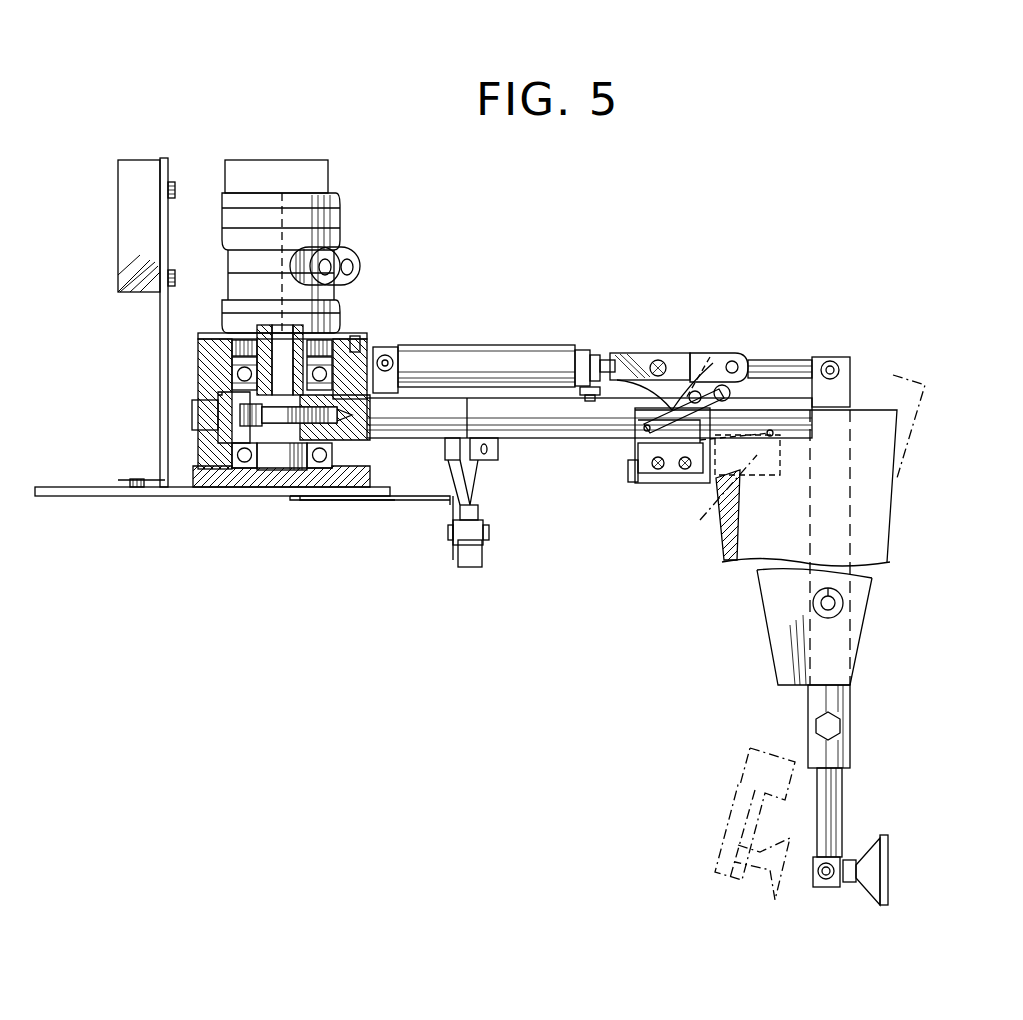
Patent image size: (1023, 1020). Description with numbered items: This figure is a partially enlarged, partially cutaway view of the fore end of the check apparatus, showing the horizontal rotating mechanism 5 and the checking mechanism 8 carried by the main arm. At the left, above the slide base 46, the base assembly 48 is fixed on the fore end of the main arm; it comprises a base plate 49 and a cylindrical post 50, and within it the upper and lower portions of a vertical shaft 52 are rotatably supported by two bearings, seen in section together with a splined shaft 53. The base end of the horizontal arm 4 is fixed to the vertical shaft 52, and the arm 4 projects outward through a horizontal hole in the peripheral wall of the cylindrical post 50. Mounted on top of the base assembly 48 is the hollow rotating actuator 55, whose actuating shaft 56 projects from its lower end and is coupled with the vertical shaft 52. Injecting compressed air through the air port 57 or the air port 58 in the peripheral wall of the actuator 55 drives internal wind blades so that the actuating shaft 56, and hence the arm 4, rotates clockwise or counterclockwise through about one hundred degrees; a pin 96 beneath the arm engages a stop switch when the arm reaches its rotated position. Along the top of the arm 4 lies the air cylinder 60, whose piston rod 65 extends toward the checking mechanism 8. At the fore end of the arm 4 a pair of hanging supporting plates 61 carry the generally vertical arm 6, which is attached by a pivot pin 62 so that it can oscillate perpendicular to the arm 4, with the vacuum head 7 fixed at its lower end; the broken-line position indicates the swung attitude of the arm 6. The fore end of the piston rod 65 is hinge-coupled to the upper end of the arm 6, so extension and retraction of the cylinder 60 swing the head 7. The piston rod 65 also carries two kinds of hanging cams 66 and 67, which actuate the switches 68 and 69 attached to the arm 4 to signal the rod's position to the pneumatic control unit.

The horizontal arm 4 is at (548, 438).
The horizontal rotating mechanism 5 is at (378, 265).
The vertical arm 6 is at (848, 702).
The vacuum head 7 is at (890, 862).
The checking mechanism 8 is at (912, 462).
The slide base 46 is at (68, 490).
The base assembly 48 is at (350, 497).
The base plate 49 is at (322, 480).
The cylindrical post 50 is at (267, 425).
The vertical shaft 52 is at (272, 462).
The shaft 53 is at (362, 440).
The rotating actuator 55 is at (232, 262).
The actuating shaft 56 is at (300, 328).
The air port 57 is at (358, 254).
The air port 58 is at (352, 268).
The air cylinder 60 is at (505, 355).
The hanging supporting plate 61 is at (878, 528).
The pivot pin 62 is at (843, 603).
The piston rod 65 is at (778, 362).
The hanging cam 66 is at (665, 402).
The hanging cam 67 is at (724, 365).
The switch 68 is at (660, 470).
The switch 69 is at (745, 468).
The pin 96 is at (486, 533).